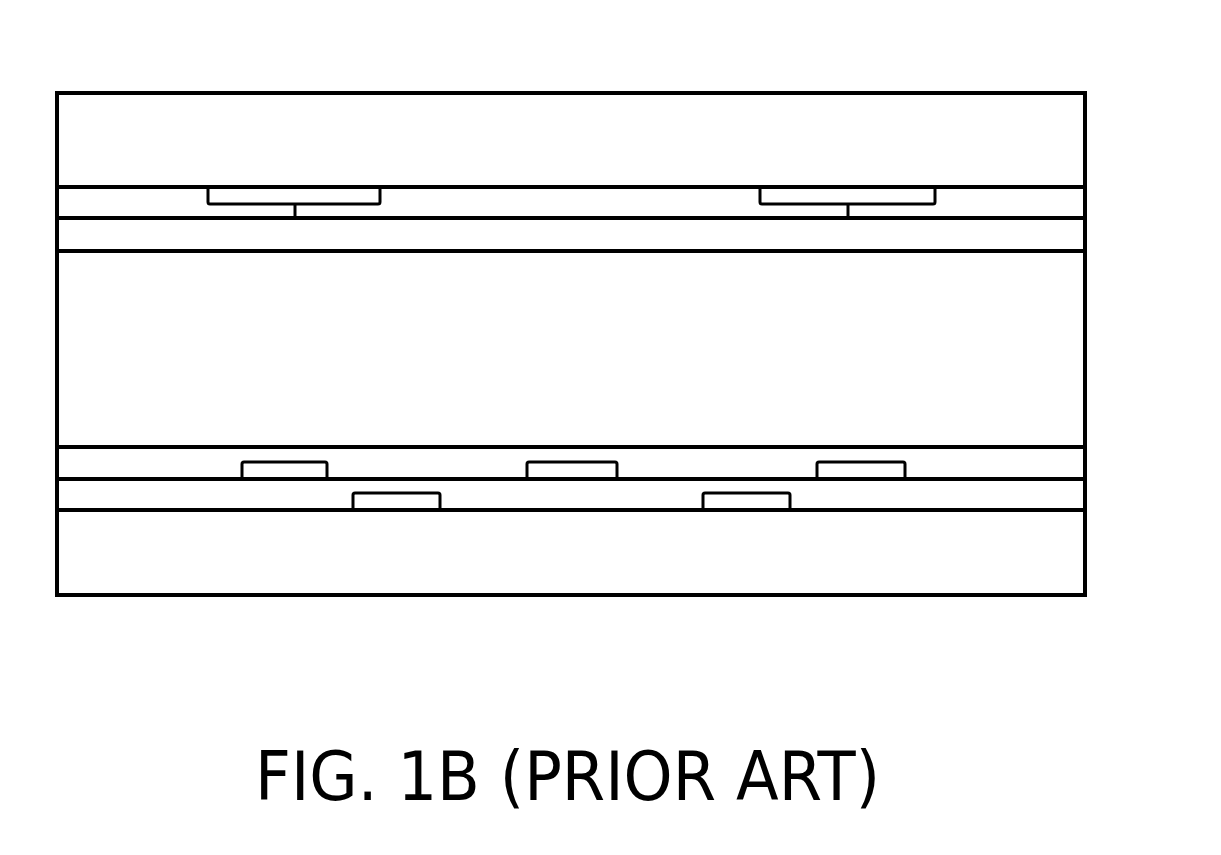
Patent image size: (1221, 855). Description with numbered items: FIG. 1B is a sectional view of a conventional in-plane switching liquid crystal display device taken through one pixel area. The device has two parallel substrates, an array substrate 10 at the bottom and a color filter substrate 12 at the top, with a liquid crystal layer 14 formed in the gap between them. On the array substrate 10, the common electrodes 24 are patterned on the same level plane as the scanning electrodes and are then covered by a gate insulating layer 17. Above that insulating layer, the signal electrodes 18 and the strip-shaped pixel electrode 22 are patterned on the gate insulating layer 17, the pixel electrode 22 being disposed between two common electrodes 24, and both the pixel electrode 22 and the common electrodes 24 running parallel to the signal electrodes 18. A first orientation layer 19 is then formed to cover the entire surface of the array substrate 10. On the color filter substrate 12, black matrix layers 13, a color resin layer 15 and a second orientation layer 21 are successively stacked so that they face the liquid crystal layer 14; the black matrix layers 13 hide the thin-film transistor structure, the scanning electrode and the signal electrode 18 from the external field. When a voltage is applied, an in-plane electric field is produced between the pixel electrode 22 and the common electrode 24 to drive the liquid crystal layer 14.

The array substrate 10 is at (1070, 548).
The color filter substrate 12 is at (1070, 136).
The black matrix layer 13 is at (295, 196).
The liquid crystal layer 14 is at (1070, 348).
The color resin layer 15 is at (588, 196).
The gate insulating layer 17 is at (1070, 493).
The signal electrode 18 is at (285, 468).
The first orientation layer 19 is at (1070, 455).
The second orientation layer 21 is at (1070, 232).
The pixel electrode 22 is at (575, 468).
The common electrode 24 is at (397, 500).